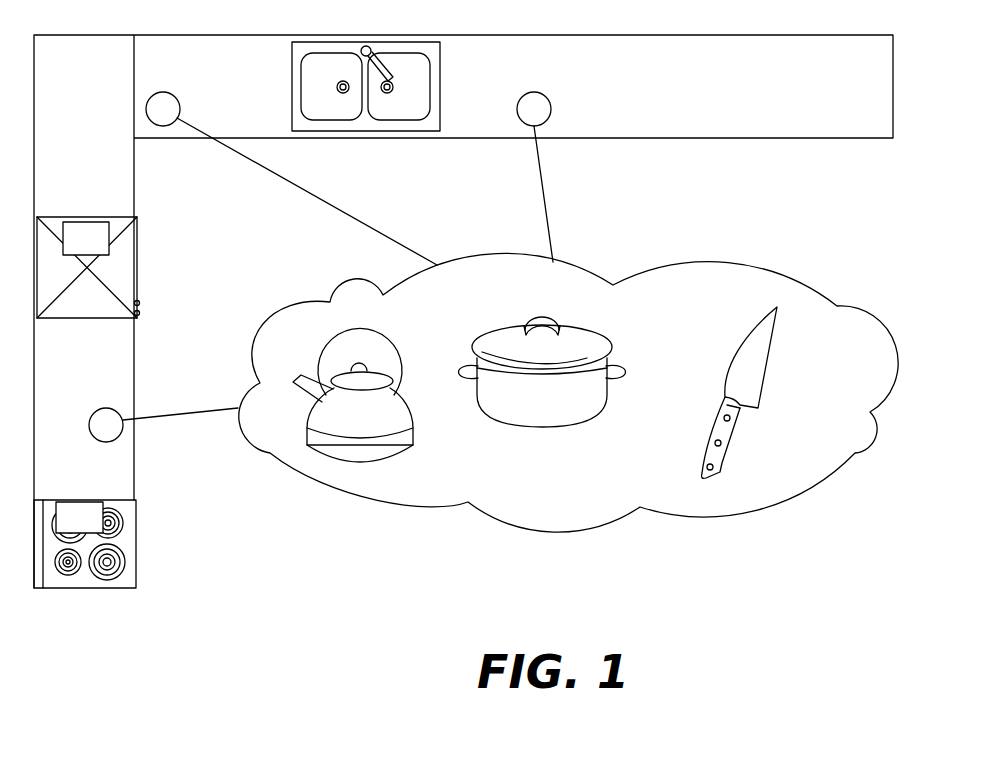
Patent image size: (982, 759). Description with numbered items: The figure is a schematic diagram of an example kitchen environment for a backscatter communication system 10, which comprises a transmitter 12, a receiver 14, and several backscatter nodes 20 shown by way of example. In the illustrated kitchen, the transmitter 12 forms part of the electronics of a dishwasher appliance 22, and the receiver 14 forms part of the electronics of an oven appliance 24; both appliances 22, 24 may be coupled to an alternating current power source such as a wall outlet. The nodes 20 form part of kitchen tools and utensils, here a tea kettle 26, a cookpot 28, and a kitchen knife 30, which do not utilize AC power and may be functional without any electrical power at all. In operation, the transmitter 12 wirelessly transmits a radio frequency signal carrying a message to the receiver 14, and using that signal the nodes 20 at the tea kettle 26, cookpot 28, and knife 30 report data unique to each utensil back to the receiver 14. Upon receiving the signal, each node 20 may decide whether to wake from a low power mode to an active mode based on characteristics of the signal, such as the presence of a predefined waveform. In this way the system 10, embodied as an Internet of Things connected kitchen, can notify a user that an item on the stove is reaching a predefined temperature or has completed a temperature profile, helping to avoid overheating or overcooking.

The backscatter communication system 10 is at (394, 558).
The transmitter 12 is at (72, 251).
The receiver 14 is at (66, 530).
The backscatter node 20 is at (143, 84).
The dishwasher appliance 22 is at (154, 265).
The oven appliance 24 is at (152, 544).
The tea kettle 26 is at (412, 443).
The cookpot 28 is at (572, 425).
The kitchen knife 30 is at (770, 377).